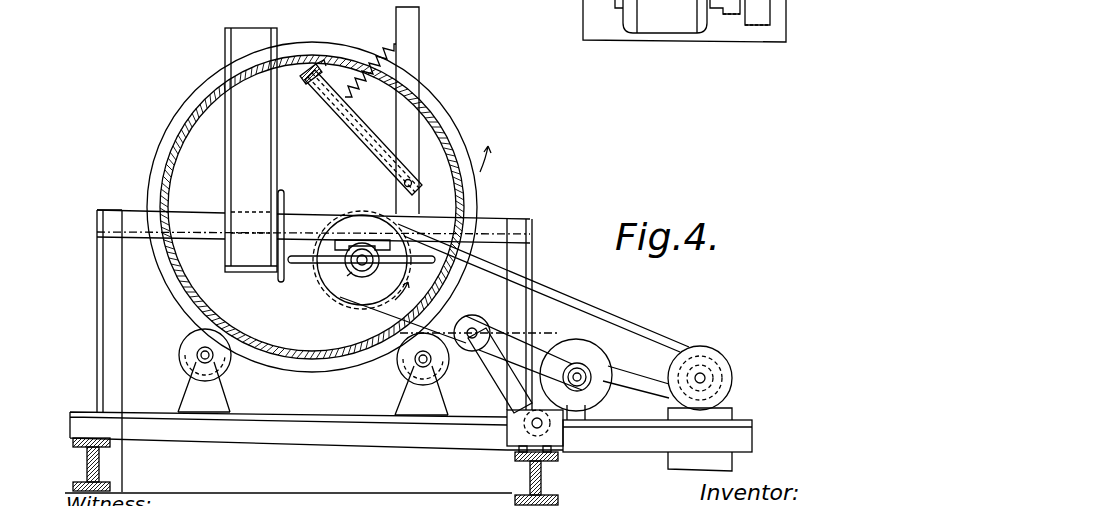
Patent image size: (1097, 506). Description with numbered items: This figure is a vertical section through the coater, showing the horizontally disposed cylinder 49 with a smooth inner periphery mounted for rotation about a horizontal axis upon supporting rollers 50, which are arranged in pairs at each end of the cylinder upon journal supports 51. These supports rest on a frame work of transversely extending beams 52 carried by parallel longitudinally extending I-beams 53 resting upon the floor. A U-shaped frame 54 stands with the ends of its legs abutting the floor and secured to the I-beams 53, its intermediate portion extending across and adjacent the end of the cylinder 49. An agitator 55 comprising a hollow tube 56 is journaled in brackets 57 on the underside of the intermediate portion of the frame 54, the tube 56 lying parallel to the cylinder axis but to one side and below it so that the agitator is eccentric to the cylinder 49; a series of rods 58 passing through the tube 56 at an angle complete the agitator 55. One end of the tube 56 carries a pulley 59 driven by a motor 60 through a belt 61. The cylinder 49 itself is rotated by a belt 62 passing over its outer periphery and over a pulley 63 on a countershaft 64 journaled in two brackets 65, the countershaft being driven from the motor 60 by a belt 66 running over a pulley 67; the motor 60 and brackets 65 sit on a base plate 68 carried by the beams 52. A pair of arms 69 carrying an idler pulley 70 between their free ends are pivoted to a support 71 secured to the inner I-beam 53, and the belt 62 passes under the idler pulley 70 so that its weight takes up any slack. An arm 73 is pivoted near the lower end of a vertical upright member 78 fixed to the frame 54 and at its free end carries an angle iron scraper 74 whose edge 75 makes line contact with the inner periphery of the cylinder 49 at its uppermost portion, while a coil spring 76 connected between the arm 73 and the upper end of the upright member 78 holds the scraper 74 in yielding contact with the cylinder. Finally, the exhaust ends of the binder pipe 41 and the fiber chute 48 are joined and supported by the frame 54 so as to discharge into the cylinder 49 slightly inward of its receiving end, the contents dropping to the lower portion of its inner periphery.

The pipe 41 is at (282, 200).
The chute 48 is at (225, 183).
The cylinder 49 is at (202, 115).
The supporting rollers 50 is at (180, 347).
The journal supports 51 is at (196, 385).
The beams 52 is at (313, 428).
The I-beams 53 is at (100, 463).
The frame 54 is at (131, 203).
The agitator 55 is at (345, 283).
The tube 56 is at (360, 306).
The brackets 57 is at (352, 249).
The rods 58 is at (312, 266).
The pulley 59 is at (366, 306).
The motor 60 is at (713, 358).
The belt 61 is at (628, 326).
The belt 62 is at (462, 292).
The pulley 63 is at (612, 382).
The countershaft 64 is at (574, 372).
The brackets 65 is at (577, 424).
The belt 66 is at (642, 421).
The pulley 67 is at (583, 346).
The base plate 68 is at (742, 426).
The arms 69 is at (506, 394).
The idler pulley 70 is at (475, 322).
The support 71 is at (509, 432).
The arm 73 is at (376, 152).
The scraper 74 is at (308, 96).
The edge 75 is at (322, 62).
The coil spring 76 is at (380, 50).
The post 78 is at (413, 62).